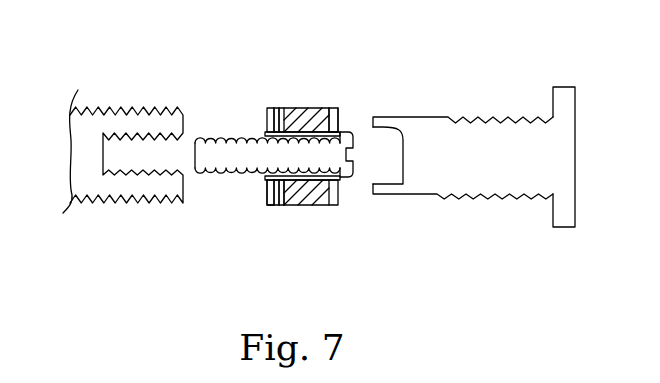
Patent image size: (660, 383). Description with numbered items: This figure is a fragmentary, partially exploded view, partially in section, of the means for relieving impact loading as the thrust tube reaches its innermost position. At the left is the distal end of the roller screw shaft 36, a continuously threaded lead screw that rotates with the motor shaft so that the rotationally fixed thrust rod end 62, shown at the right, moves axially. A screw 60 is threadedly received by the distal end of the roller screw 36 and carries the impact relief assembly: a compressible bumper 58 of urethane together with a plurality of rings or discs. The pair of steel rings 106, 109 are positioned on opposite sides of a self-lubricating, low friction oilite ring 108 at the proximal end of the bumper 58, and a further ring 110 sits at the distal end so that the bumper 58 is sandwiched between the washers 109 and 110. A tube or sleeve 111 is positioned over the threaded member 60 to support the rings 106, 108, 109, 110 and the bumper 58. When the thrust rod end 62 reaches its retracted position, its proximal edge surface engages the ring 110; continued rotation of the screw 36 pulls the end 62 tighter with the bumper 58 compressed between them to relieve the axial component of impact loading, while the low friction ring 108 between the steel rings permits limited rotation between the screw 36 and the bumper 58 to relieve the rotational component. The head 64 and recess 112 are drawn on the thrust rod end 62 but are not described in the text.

The roller screw shaft 36 is at (137, 122).
The compressible bumper 58 is at (322, 110).
The screw 60 is at (215, 152).
The thrust rod end 62 is at (460, 130).
The head 64 is at (565, 100).
The steel ring 106 is at (268, 200).
The self-lubricating ring 108 is at (280, 110).
The steel ring 109 is at (290, 202).
The ring 110 is at (332, 202).
The sleeve 111 is at (342, 118).
The socket 112 is at (402, 176).